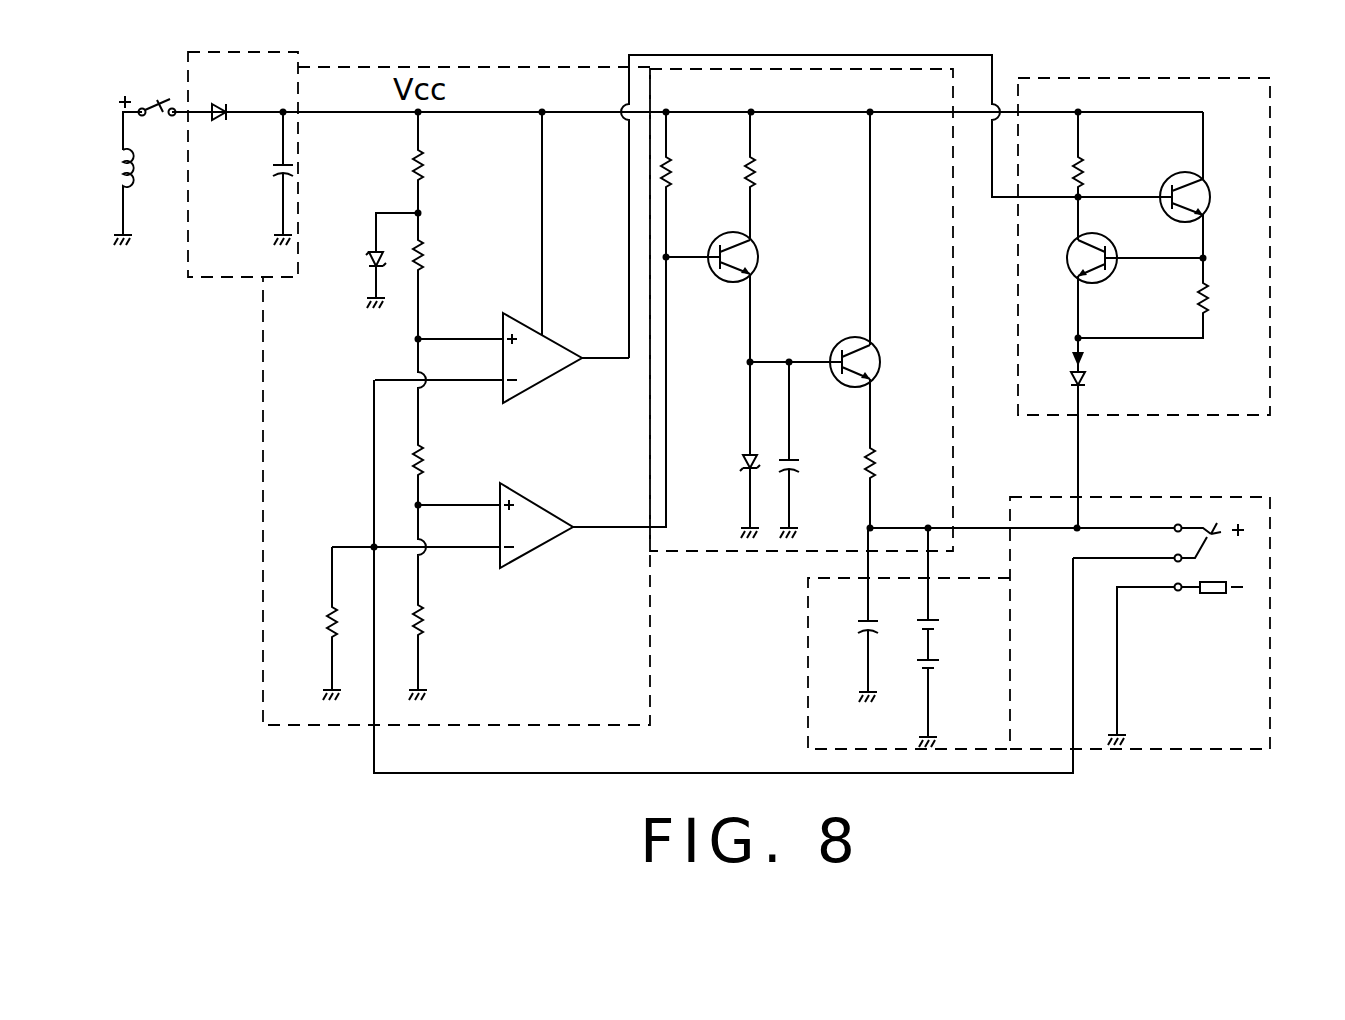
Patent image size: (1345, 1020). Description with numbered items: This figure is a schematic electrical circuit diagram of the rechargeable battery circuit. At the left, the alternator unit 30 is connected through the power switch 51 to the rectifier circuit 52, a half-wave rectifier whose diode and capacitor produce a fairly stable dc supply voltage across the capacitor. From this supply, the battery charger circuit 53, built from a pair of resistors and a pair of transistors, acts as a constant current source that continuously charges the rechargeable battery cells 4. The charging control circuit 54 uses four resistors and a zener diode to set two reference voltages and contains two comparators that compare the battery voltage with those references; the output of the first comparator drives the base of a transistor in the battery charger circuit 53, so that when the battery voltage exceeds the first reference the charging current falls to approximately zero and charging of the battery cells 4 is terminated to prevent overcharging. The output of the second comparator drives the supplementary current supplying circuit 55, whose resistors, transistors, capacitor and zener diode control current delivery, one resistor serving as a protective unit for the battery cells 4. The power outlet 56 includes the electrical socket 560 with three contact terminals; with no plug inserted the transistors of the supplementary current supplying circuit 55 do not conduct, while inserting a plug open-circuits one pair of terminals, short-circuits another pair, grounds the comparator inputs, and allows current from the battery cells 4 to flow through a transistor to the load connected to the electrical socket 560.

The alternator unit 30 is at (112, 166).
The power switch 51 is at (160, 90).
The rectifier circuit 52 is at (280, 52).
The battery charger circuit 53 is at (1162, 78).
The charging control circuit 54 is at (263, 483).
The supplementary current supplying circuit 55 is at (716, 551).
The power outlet 56 is at (808, 650).
The electrical socket 560 is at (1212, 560).
The rechargeable battery cells 4 is at (945, 636).